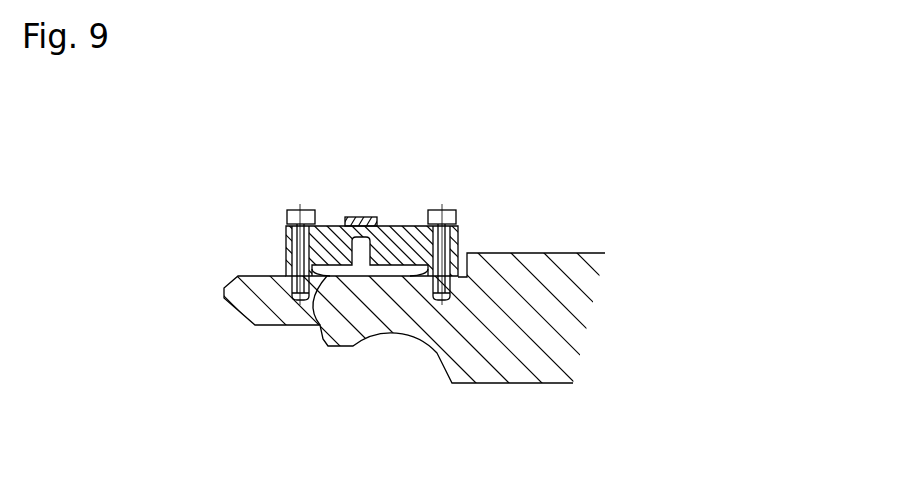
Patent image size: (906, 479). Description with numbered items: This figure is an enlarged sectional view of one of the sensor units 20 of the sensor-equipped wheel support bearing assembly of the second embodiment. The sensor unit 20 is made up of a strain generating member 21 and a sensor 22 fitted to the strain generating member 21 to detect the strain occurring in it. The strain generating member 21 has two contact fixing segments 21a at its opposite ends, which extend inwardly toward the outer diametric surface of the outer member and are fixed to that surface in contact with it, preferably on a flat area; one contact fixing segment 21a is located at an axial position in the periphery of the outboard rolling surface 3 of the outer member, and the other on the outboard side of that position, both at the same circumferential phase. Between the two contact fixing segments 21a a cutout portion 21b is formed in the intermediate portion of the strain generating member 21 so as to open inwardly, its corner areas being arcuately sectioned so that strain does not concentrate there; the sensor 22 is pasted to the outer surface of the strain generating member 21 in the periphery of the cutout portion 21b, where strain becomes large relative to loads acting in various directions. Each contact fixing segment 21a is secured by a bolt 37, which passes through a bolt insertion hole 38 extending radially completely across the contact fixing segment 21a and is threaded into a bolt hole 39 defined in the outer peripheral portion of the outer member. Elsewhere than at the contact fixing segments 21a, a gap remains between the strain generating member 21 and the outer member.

The rolling surface 3 is at (436, 354).
The sensor unit 20 is at (372, 163).
The strain generating member 21 is at (383, 289).
The contact fixing segment 21a is at (327, 280).
The cutout portion 21b is at (358, 277).
The sensor 22 is at (360, 216).
The bolt 37 is at (297, 210).
The bolt insertion hole 38 is at (294, 248).
The bolt hole 39 is at (300, 303).